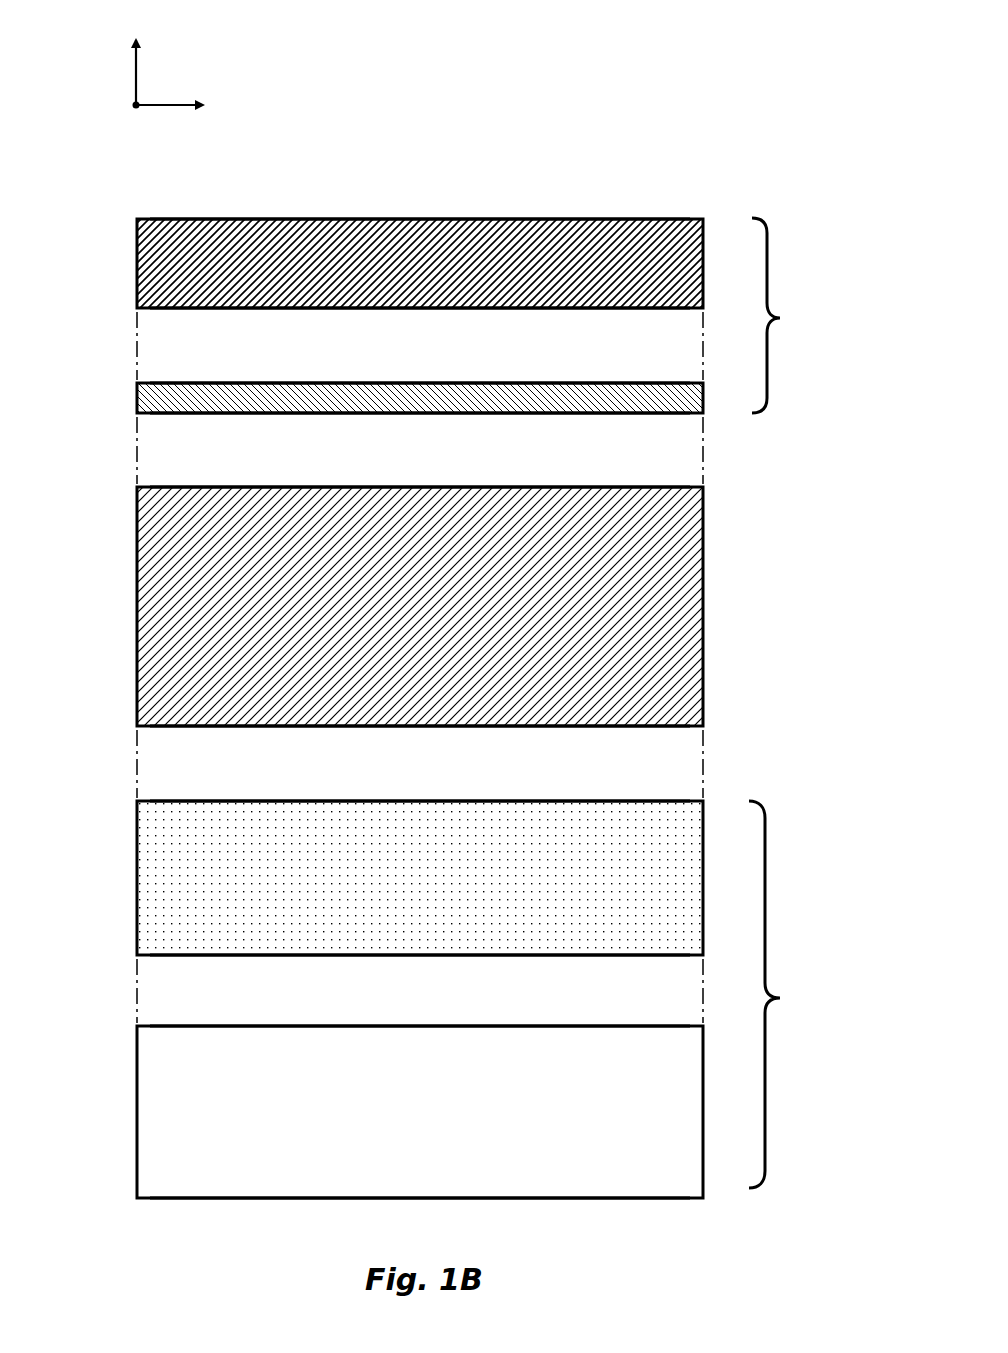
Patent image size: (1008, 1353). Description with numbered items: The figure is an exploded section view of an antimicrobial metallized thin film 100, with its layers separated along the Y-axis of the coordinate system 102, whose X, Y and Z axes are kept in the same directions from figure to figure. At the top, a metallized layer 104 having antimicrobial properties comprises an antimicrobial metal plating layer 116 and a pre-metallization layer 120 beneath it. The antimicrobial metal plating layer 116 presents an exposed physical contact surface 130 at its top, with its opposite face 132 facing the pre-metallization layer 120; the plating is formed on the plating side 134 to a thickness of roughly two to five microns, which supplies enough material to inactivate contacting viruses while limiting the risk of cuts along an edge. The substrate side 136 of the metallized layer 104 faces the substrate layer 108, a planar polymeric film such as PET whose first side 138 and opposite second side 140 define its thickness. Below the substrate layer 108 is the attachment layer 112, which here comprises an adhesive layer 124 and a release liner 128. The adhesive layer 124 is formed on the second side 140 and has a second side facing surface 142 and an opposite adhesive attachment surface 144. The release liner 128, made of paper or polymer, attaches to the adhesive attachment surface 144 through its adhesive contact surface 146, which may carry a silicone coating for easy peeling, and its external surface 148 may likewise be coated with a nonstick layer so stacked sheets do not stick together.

The antimicrobial metallized thin film 100 is at (581, 106).
The coordinate system 102 is at (148, 93).
The metallized layer 104 is at (780, 318).
The substrate layer 108 is at (703, 610).
The attachment layer 112 is at (780, 998).
The antimicrobial metal plating layer 116 is at (137, 263).
The pre-metallization layer 120 is at (137, 398).
The adhesive layer 124 is at (137, 883).
The release liner 128 is at (137, 1119).
The physical contact surface 130 is at (192, 219).
The bottom surface of first layer 132 is at (211, 309).
The plating side 134 is at (634, 383).
The substrate side 136 is at (610, 413).
The first side 138 is at (203, 487).
The second side 140 is at (218, 727).
The second side facing surface 142 is at (634, 801).
The adhesive attachment surface 144 is at (608, 955).
The adhesive contact surface 146 is at (205, 1026).
The external surface 148 is at (228, 1198).